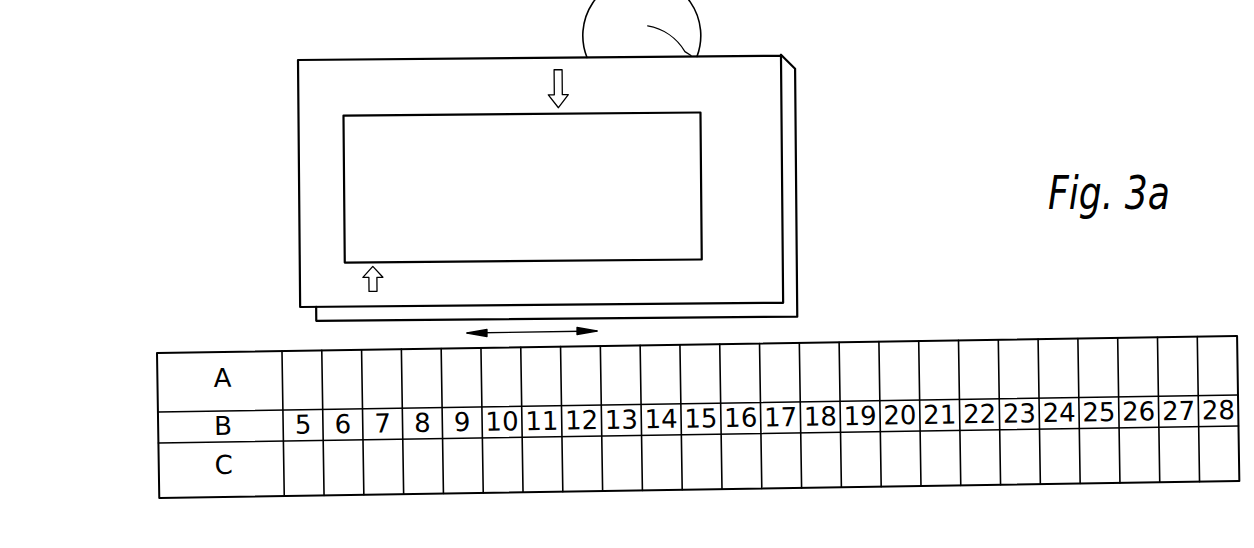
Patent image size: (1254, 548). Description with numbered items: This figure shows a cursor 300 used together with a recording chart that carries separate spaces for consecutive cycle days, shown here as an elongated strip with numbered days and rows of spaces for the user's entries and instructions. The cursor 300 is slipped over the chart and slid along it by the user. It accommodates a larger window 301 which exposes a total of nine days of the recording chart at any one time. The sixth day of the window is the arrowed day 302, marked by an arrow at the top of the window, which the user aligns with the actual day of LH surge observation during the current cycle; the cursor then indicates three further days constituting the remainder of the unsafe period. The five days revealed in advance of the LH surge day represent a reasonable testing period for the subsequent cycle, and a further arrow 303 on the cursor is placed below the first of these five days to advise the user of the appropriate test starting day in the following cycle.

The cursor 300 is at (494, 161).
The window 301 is at (468, 183).
The arrowed day 302 is at (523, 64).
The further arrow 303 is at (307, 282).